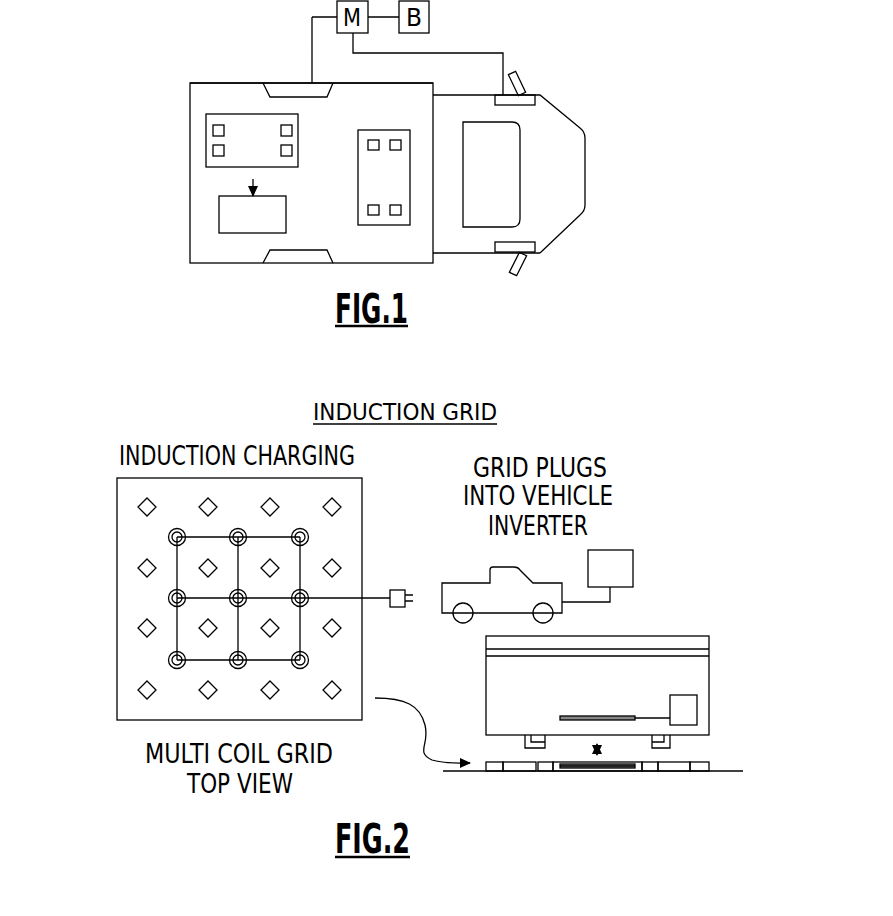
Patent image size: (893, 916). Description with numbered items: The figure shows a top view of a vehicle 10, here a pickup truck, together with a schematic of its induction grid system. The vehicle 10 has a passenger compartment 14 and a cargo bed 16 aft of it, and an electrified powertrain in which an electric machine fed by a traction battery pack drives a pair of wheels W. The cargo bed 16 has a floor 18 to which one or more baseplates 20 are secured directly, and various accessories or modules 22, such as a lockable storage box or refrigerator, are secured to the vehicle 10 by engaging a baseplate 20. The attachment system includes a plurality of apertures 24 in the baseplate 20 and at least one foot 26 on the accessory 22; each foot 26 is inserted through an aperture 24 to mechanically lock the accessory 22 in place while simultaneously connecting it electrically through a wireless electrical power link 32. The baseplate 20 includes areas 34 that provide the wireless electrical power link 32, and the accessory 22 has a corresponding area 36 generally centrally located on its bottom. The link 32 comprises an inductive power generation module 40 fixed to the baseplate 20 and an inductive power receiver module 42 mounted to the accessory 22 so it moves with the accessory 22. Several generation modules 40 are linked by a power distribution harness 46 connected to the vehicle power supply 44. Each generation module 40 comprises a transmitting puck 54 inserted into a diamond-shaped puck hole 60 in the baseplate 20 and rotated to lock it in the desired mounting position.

In FIG. 1, the vehicle 10 is at (625, 88).
In FIG. 2, the vehicle 10 is at (458, 583).
In FIG. 1, the passenger compartment 14 is at (487, 238).
In FIG. 1, the cargo bed 16 is at (228, 245).
In FIG. 1, the floor 18 is at (217, 100).
In FIG. 2, the floor 18 is at (443, 771).
In FIG. 1, the baseplate 20 is at (206, 118).
In FIG. 2, the baseplate 20 is at (120, 522).
In FIG. 1, the accessory 22 is at (227, 213).
In FIG. 2, the accessory 22 is at (692, 632).
In FIG. 1, the apertures 24 is at (213, 151).
In FIG. 2, the apertures 24 is at (138, 690).
In FIG. 2, the foot 26 is at (525, 743).
In FIG. 2, the wireless electrical power link 32 is at (570, 786).
In FIG. 2, the areas 34 is at (152, 553).
In FIG. 2, the corresponding area 36 is at (553, 720).
In FIG. 2, the inductive power generation module 40 is at (181, 527).
In FIG. 2, the inductive power receiver module 42 is at (628, 715).
In FIG. 2, the vehicle power supply 44 is at (625, 582).
In FIG. 2, the power distribution harness 46 is at (341, 597).
In FIG. 2, the puck 54 is at (172, 546).
In FIG. 2, the puck hole 60 is at (637, 773).
In FIG. 1, the wheels W is at (283, 88).